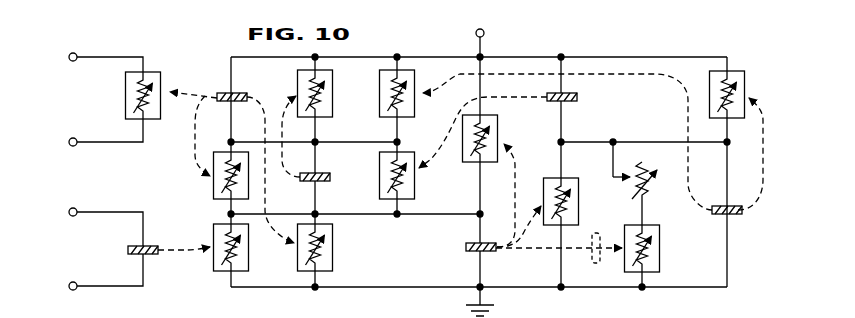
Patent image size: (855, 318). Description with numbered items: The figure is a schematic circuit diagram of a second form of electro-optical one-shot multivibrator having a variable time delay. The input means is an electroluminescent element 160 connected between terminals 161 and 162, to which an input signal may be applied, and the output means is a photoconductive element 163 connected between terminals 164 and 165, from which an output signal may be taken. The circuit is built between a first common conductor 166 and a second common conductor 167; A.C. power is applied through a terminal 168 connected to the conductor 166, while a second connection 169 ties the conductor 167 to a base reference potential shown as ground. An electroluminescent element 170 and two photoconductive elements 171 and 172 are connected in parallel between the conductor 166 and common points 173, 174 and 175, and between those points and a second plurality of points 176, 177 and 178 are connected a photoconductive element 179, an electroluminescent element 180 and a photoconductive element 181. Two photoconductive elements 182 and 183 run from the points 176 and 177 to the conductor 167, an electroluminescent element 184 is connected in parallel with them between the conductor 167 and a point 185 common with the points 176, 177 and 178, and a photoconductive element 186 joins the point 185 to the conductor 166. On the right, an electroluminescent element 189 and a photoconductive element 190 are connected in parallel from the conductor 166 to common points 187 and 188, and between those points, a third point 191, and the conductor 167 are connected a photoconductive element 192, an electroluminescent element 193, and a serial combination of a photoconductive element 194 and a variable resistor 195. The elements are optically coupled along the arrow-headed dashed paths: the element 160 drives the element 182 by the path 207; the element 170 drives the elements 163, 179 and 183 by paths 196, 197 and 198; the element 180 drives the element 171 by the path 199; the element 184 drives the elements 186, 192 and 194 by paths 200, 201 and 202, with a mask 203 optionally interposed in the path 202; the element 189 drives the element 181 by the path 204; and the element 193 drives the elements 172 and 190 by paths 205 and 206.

The electroluminescent element 160 is at (128, 250).
The terminal 161 is at (70, 284).
The terminal 162 is at (72, 209).
The photoconductive element 163 is at (125, 97).
The terminal 164 is at (71, 140).
The terminal 165 is at (72, 54).
The first common conductor 166 is at (616, 57).
The second common conductor 167 is at (403, 288).
The terminal 168 is at (485, 33).
The second connection 169 is at (485, 295).
The electroluminescent element 170 is at (226, 93).
The photoconductive element 171 is at (298, 76).
The photoconductive element 172 is at (380, 76).
The common point 173 is at (231, 141).
The common point 174 is at (316, 141).
The common point 175 is at (398, 141).
The point 176 is at (230, 214).
The point 177 is at (322, 203).
The point 178 is at (397, 215).
The photoconductive element 179 is at (213, 185).
The electroluminescent element 180 is at (333, 165).
The photoconductive element 181 is at (415, 178).
The photoconductive element 182 is at (223, 270).
The photoconductive element 183 is at (333, 260).
The electroluminescent element 184 is at (466, 250).
The point 185 is at (480, 219).
The photoconductive element 186 is at (500, 124).
The common point 187 is at (561, 141).
The common point 188 is at (728, 142).
The electroluminescent element 189 is at (576, 97).
The photoconductive element 190 is at (745, 80).
The third point 191 is at (614, 141).
The photoconductive element 192 is at (581, 201).
The electroluminescent element 193 is at (733, 214).
The photoconductive element 194 is at (662, 258).
The variable resistor 195 is at (643, 162).
The optical path 196 is at (204, 95).
The optical path 197 is at (195, 146).
The optical path 198 is at (265, 108).
The optical path 199 is at (279, 178).
The optical path 200 is at (514, 167).
The optical path 201 is at (516, 246).
The optical path 202 is at (538, 249).
The mask 203 is at (601, 262).
The optical path 204 is at (492, 97).
The optical path 205 is at (687, 182).
The optical path 206 is at (763, 140).
The optical path 207 is at (189, 252).